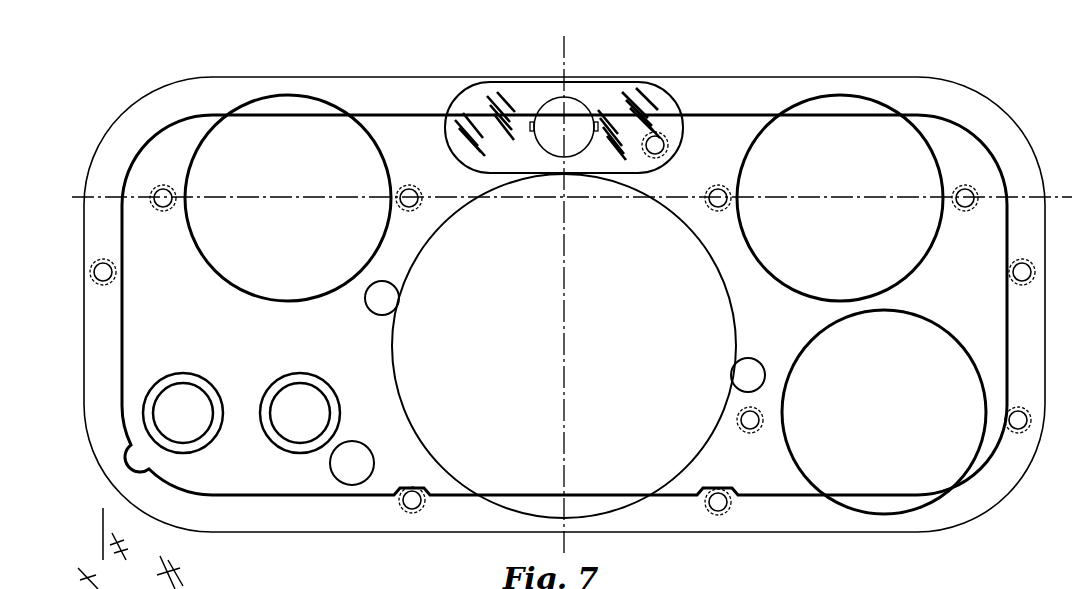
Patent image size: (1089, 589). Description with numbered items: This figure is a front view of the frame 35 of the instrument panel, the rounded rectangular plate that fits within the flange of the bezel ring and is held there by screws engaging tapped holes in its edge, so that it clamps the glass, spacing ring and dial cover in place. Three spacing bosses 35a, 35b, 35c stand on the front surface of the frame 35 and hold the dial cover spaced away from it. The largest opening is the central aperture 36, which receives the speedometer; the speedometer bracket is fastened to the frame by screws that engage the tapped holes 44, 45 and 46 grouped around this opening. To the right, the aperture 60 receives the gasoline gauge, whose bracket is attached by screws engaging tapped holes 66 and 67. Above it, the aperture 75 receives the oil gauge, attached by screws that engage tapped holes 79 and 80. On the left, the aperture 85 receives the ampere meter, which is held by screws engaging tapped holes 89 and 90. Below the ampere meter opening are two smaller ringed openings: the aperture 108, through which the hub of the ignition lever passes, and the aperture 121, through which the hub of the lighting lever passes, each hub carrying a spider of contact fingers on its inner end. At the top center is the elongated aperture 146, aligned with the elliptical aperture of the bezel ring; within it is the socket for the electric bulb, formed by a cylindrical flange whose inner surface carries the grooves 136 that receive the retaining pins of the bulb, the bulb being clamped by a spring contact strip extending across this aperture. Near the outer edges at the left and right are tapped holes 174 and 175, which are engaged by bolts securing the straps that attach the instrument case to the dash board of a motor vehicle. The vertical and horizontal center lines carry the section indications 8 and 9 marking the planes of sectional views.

The section line 8- 8 is at (564, 553).
The section line 9- 9 is at (1070, 197).
The frame 35 is at (886, 77).
The spacing boss 35a is at (382, 292).
The spacing boss 35b is at (360, 456).
The spacing boss 35c is at (752, 365).
The aperture 36 is at (683, 437).
The tapped hole 44 is at (412, 492).
The tapped hole 45 is at (720, 500).
The tapped hole 46 is at (664, 145).
The aperture 60 is at (935, 342).
The tapped hole 66 is at (1018, 420).
The tapped hole 67 is at (764, 390).
The aperture 75 is at (908, 250).
The tapped hole 79 is at (712, 196).
The tapped hole 80 is at (965, 198).
The aperture 85 is at (262, 265).
The tapped hole 89 is at (163, 198).
The tapped hole 90 is at (418, 197).
The aperture 108 is at (195, 405).
The aperture 121 is at (318, 412).
The grooves 136 is at (564, 127).
The aperture 146 is at (573, 100).
The tapped hole 174 is at (103, 272).
The tapped hole 175 is at (1022, 272).